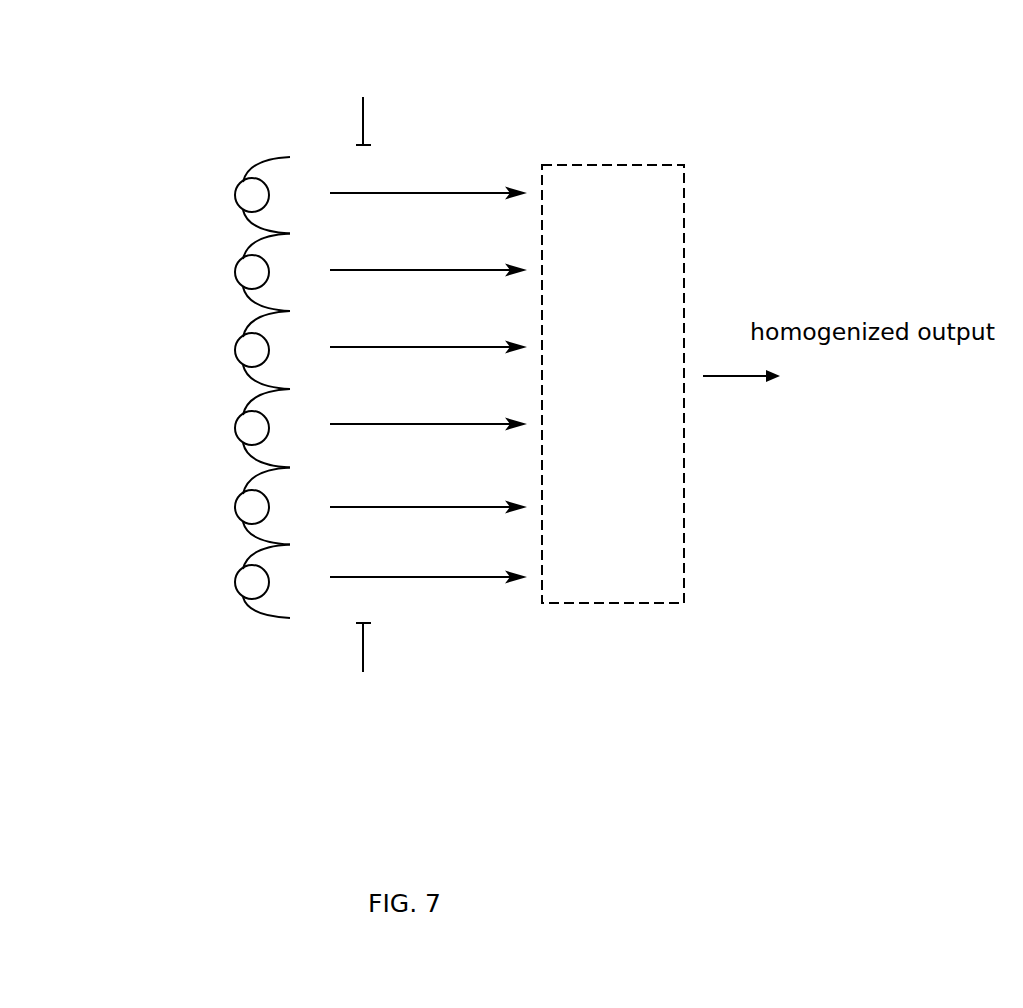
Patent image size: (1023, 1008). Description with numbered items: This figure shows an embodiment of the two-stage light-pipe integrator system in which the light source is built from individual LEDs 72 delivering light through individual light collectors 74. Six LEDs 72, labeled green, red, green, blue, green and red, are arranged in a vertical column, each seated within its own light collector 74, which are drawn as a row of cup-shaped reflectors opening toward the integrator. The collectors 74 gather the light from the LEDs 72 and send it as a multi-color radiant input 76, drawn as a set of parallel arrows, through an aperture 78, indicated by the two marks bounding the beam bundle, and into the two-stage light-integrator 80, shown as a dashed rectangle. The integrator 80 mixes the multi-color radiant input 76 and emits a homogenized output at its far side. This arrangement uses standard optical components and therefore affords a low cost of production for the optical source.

The individual LEDs 72 is at (213, 183).
The individual light collectors 74 is at (277, 652).
The multi-color radiant input 76 is at (460, 555).
The aperture 78 is at (365, 653).
The two-stage light-integrator 80 is at (617, 192).